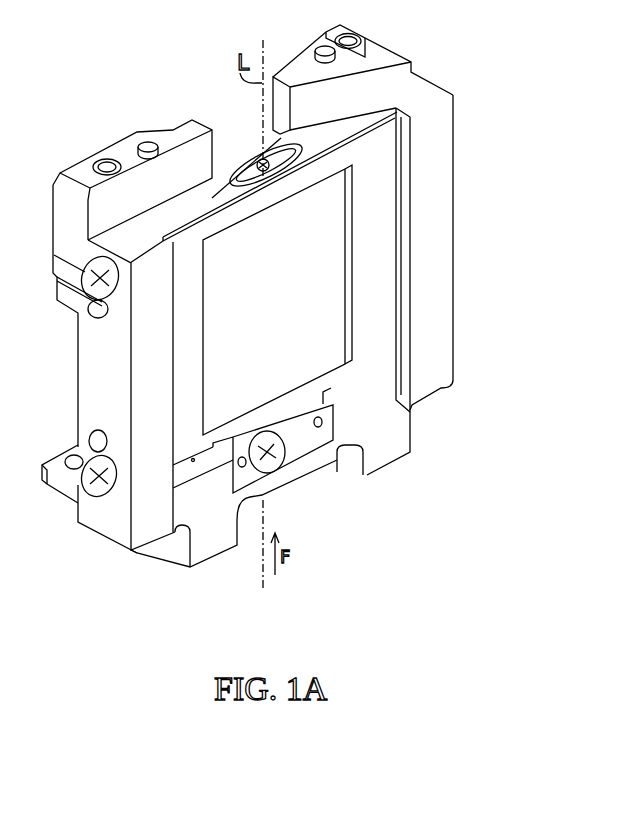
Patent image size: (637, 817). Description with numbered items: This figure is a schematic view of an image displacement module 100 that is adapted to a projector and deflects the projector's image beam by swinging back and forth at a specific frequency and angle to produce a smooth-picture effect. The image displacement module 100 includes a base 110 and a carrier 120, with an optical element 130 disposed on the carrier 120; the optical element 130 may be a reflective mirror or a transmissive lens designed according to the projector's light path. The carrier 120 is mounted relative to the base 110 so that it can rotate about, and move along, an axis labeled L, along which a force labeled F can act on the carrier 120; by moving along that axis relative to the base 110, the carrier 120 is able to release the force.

The image displacement module 100 is at (487, 543).
The base 110 is at (187, 128).
The carrier 120 is at (372, 301).
The optical element 130 is at (318, 254).